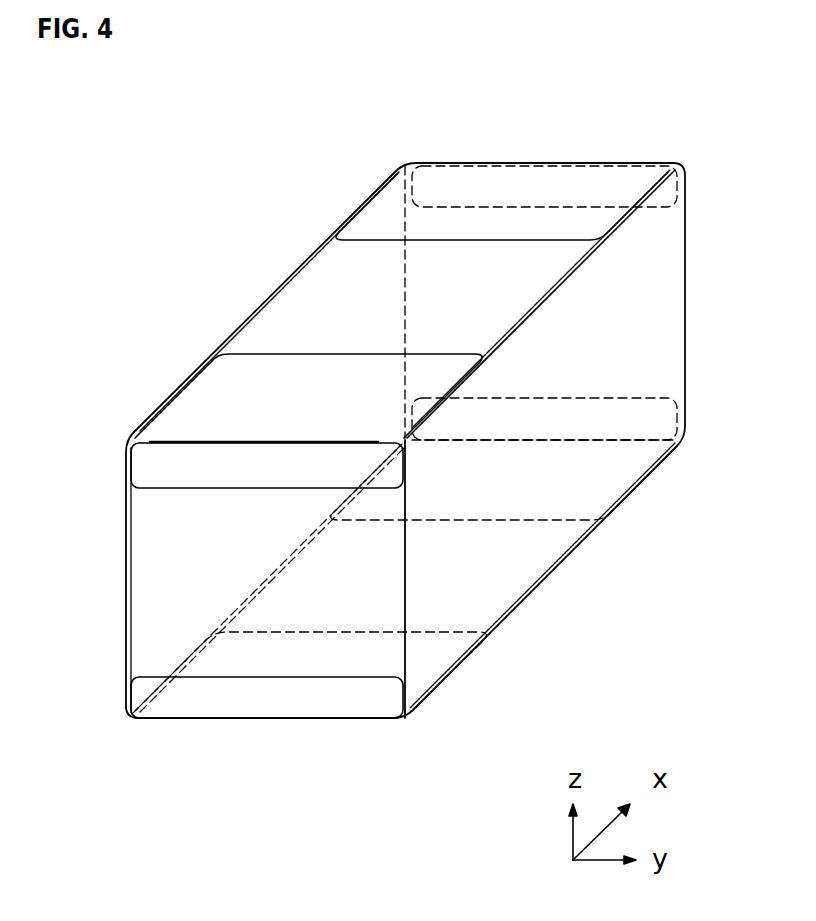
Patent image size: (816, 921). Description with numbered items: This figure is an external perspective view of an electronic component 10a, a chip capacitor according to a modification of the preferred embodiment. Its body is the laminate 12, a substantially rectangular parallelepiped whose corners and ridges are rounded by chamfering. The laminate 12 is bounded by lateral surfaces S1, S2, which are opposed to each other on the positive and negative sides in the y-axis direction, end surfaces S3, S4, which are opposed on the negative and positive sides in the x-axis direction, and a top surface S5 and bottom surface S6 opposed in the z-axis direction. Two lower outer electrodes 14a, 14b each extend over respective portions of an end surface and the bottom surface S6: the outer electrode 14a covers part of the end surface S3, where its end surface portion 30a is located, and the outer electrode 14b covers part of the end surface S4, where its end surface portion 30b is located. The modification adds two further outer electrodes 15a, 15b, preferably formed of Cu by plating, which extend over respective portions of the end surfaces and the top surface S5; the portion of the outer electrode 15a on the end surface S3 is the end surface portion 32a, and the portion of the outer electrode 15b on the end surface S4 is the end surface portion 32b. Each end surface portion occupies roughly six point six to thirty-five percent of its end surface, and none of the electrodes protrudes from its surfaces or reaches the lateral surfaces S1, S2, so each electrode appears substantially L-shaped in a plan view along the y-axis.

The electronic component 10a is at (238, 137).
The laminate 12 is at (568, 158).
The outer electrode 14a is at (445, 660).
The outer electrode 14b is at (612, 498).
The outer electrode 15a is at (225, 392).
The outer electrode 15b is at (390, 230).
The end surface portion 30a is at (305, 702).
The end surface portion 30b is at (610, 417).
The end surface portion 32a is at (230, 470).
The end surface portion 32b is at (430, 182).
The lateral surface S1 is at (537, 507).
The lateral surface S2 is at (253, 370).
The end surface S3 is at (272, 618).
The end surface S4 is at (595, 193).
The top surface S5 is at (345, 313).
The bottom surface S6 is at (488, 577).